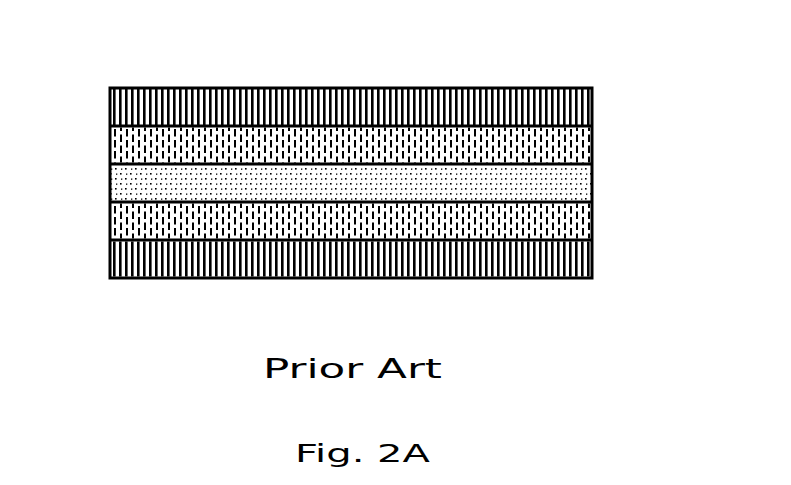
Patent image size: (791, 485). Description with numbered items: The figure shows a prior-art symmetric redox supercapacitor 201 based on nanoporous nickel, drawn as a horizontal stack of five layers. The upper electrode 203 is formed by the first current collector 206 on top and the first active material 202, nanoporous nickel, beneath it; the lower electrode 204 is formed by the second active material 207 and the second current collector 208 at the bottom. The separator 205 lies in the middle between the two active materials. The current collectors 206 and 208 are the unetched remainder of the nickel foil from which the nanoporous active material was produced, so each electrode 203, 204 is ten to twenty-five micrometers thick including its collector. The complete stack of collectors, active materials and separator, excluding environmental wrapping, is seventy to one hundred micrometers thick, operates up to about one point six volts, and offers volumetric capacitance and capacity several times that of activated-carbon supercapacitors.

The symmetric redox supercapacitor 201 is at (354, 36).
The first active material 202 is at (592, 147).
The electrode 203 is at (102, 87).
The electrode 204 is at (102, 202).
The separator 205 is at (592, 185).
The first current collector 206 is at (592, 108).
The second active material 207 is at (592, 223).
The second current collector 208 is at (592, 259).